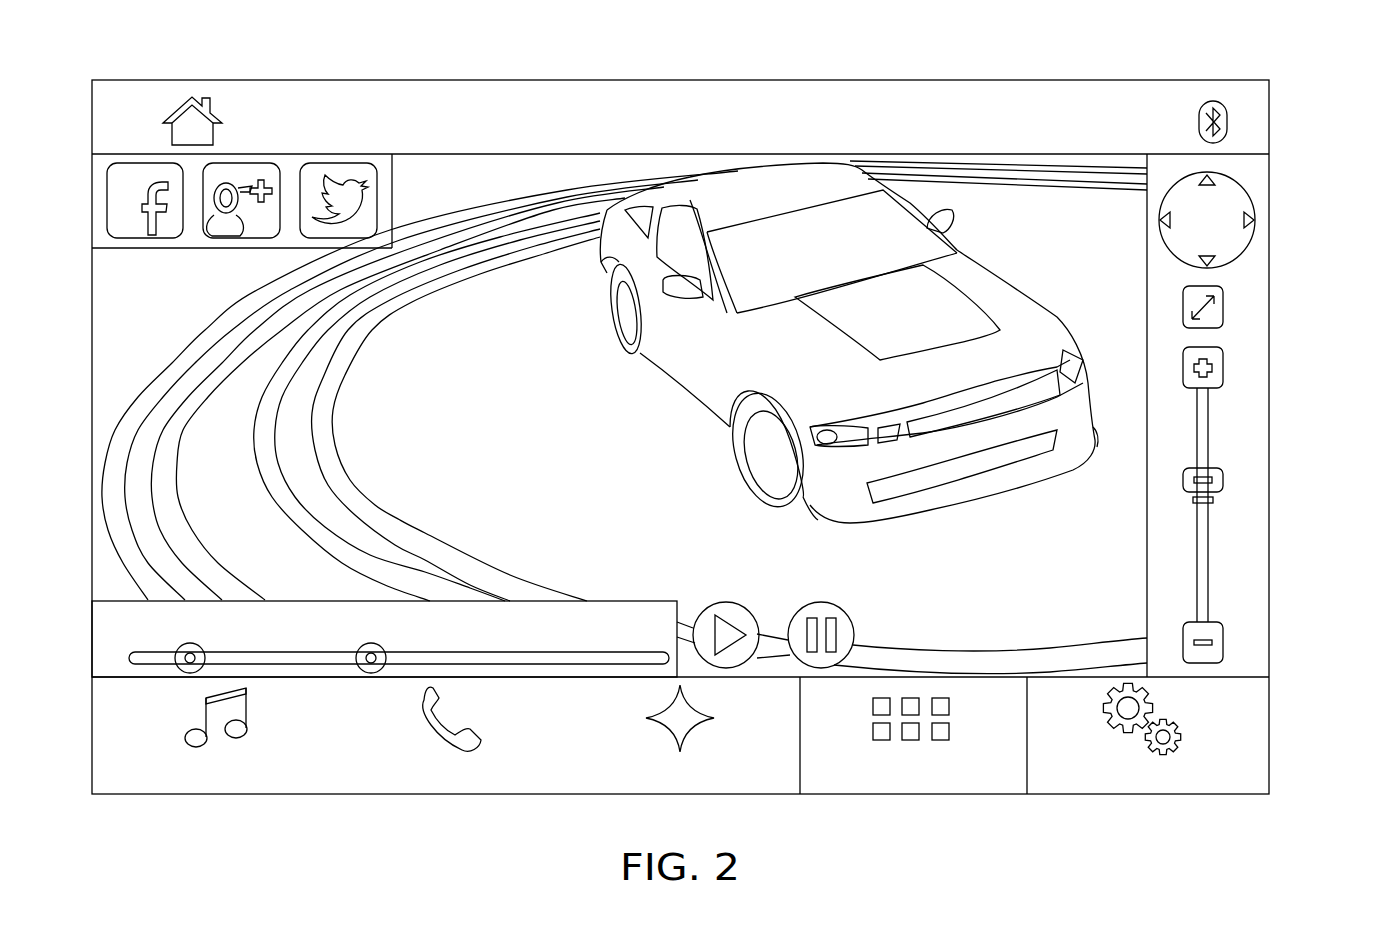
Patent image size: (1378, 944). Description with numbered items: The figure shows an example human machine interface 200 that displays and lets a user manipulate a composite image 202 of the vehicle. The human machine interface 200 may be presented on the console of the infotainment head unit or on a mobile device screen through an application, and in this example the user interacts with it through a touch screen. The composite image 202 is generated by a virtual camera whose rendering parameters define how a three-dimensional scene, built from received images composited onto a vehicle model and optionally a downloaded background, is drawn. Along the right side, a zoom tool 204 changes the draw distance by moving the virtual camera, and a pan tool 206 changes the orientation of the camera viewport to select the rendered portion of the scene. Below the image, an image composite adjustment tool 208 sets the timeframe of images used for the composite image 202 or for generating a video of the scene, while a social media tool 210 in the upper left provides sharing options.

The human machine interface 200 is at (1268, 415).
The composite image 202 is at (1083, 180).
The zoom tool 204 is at (1167, 565).
The pan tool 206 is at (1228, 242).
The image composite adjustment tool 208 is at (540, 622).
The social media tool 210 is at (193, 244).